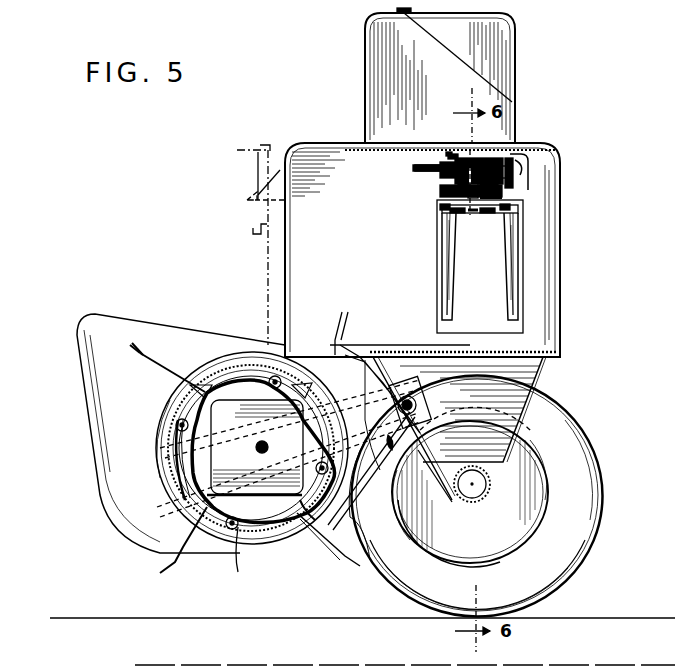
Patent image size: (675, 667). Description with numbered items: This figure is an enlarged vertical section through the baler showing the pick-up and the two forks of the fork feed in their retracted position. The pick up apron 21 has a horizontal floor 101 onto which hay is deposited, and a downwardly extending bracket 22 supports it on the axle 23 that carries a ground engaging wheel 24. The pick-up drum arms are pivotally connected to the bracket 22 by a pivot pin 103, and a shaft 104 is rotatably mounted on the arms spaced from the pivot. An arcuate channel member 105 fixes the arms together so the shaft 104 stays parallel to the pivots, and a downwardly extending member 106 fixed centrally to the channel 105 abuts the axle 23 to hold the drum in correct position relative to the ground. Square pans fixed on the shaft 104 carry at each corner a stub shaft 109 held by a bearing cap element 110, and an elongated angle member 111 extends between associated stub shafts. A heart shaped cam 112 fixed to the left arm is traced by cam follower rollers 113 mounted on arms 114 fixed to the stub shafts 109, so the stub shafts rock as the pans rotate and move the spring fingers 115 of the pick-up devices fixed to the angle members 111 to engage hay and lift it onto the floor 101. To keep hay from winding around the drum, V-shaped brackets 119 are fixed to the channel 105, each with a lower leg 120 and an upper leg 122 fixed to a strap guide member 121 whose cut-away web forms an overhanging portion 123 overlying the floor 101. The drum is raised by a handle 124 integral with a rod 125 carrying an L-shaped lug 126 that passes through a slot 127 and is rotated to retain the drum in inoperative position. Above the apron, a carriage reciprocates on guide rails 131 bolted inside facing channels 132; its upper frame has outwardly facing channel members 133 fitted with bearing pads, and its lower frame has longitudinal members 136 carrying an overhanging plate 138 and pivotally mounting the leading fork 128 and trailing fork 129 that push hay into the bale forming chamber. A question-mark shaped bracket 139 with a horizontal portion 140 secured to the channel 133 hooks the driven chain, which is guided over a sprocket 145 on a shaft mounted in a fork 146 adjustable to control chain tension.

The pick up apron 21 is at (563, 288).
The bracket 22 is at (541, 377).
The axle 23 is at (492, 484).
The ground engaging wheel 24 is at (578, 560).
The horizontal floor 101 is at (517, 356).
The pivot pin 103 is at (418, 415).
The shaft 104 is at (256, 447).
The arcuate channel member 105 is at (416, 403).
The downwardly extending member 106 is at (407, 480).
The stub shaft 109 is at (207, 382).
The bearing cap element 110 is at (222, 498).
The angle member 111 is at (218, 408).
The cam 112 is at (300, 536).
The cam follower roller 113 is at (178, 420).
The arm 114 is at (190, 390).
The spring finger 115 is at (150, 360).
The V-shaped bracket 119 is at (358, 389).
The lower leg 120 is at (362, 474).
The strap guide member 121 is at (166, 480).
The upper leg 122 is at (338, 333).
The overhanging portion 123 is at (370, 347).
The handle 124 is at (270, 143).
The rod 125 is at (265, 274).
The L-shaped lug 126 is at (252, 231).
The slot 127 is at (255, 198).
The fork 128 is at (500, 282).
The fork 129 is at (508, 300).
The guide rail 131 is at (458, 185).
The facing channel 132 is at (455, 158).
The outwardly facing channel member 133 is at (456, 199).
The longitudinal member 136 is at (440, 208).
The overhanging plate 138 is at (505, 202).
The bracket 139 is at (479, 189).
The horizontal portion 140 is at (518, 168).
The sprocket 145 is at (421, 168).
The fork 146 is at (447, 160).